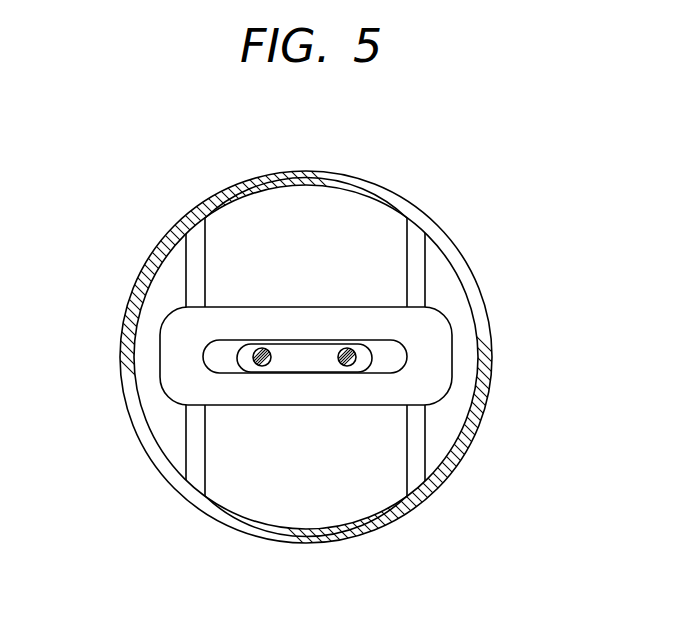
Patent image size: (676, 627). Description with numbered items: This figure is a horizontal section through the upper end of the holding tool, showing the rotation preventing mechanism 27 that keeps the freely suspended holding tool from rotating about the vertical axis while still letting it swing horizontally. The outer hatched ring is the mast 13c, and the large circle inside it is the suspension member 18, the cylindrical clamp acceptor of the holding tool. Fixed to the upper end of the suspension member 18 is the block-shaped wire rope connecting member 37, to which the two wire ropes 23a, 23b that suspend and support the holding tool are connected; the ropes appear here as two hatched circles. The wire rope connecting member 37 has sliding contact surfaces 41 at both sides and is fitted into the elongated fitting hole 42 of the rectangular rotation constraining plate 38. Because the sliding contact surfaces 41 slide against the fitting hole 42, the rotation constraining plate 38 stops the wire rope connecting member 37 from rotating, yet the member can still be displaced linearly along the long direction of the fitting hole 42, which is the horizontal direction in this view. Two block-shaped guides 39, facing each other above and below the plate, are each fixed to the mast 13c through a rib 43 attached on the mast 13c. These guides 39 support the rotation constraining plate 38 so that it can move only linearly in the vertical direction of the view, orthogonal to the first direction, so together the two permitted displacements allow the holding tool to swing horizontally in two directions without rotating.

The mast 13c is at (188, 212).
The suspension member 18 is at (345, 216).
The rotation preventing mechanism 27 is at (362, 264).
The wire rope 23a is at (255, 352).
The wire rope 23b is at (352, 349).
The wire rope connecting member 37 is at (318, 363).
The rotation constraining plate 38 is at (428, 322).
The guides 39 is at (192, 437).
The sliding contact surfaces 41 is at (270, 349).
The elongated fitting hole 42 is at (395, 358).
The rib 43 is at (147, 355).